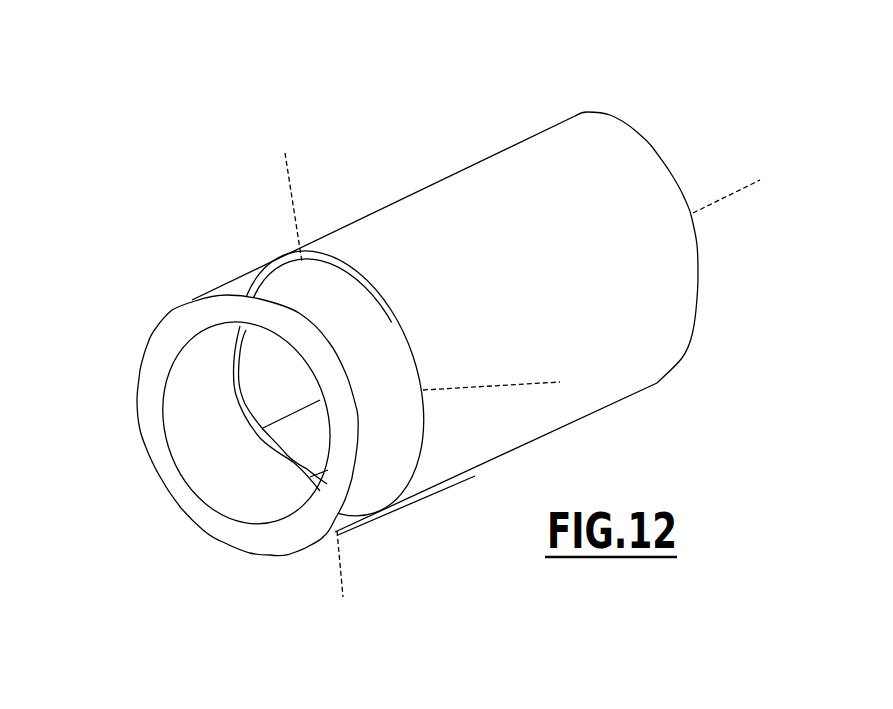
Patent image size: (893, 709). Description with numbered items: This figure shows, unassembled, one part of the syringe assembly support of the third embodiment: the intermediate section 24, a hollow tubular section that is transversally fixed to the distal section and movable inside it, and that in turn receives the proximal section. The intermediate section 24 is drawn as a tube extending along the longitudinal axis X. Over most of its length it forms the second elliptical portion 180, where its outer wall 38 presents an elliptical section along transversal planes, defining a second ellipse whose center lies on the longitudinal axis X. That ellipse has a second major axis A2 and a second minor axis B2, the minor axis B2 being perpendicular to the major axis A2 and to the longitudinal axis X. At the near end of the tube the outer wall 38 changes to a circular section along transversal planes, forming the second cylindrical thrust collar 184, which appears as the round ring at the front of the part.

The intermediate section 24 is at (497, 232).
The outer wall 38 is at (403, 225).
The second elliptical portion 180 is at (530, 190).
The second cylindrical thrust collar 184 is at (217, 292).
The second major axis A2 is at (307, 357).
The second minor axis B2 is at (507, 380).
The longitudinal axis X is at (733, 178).